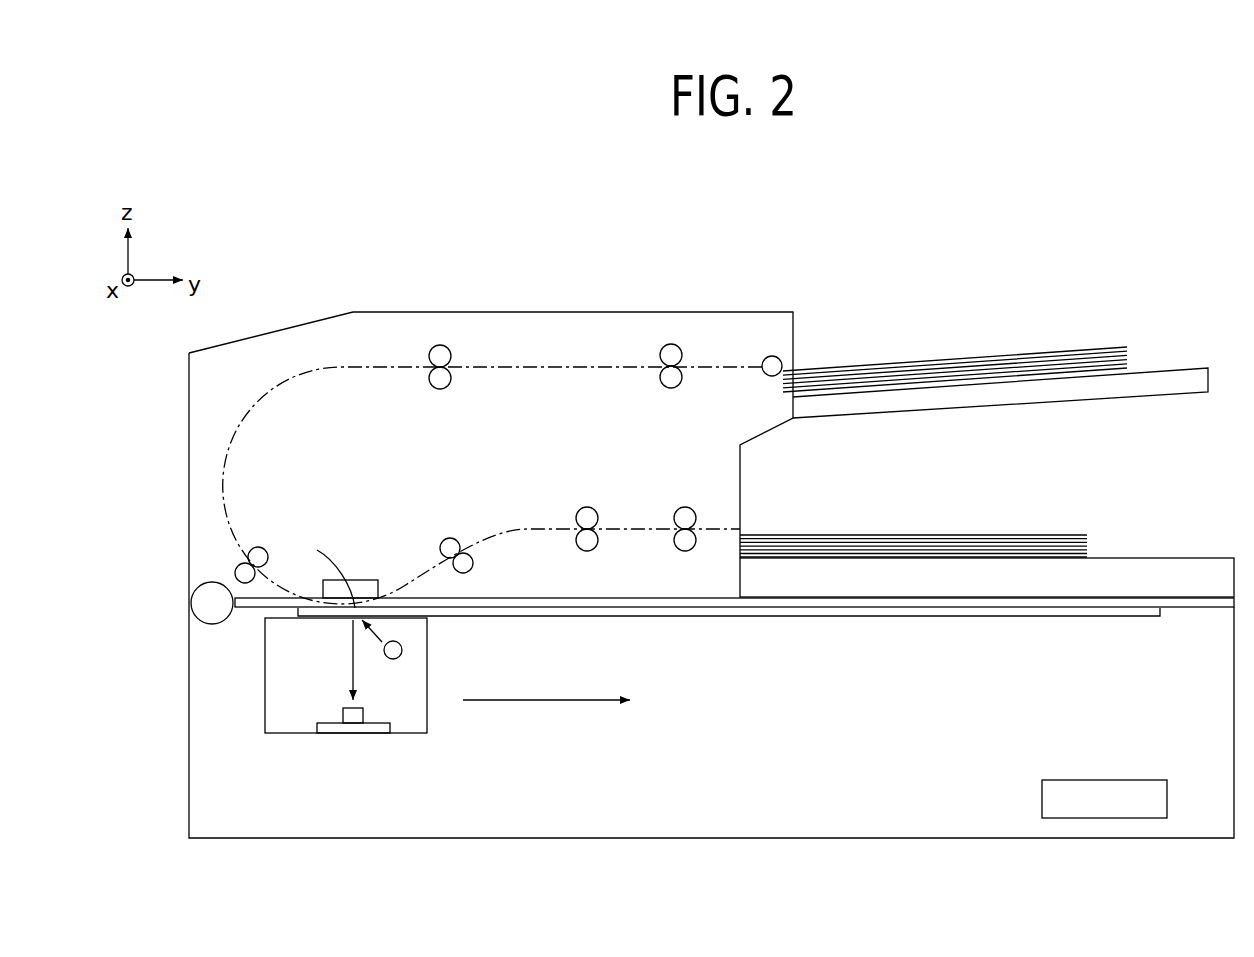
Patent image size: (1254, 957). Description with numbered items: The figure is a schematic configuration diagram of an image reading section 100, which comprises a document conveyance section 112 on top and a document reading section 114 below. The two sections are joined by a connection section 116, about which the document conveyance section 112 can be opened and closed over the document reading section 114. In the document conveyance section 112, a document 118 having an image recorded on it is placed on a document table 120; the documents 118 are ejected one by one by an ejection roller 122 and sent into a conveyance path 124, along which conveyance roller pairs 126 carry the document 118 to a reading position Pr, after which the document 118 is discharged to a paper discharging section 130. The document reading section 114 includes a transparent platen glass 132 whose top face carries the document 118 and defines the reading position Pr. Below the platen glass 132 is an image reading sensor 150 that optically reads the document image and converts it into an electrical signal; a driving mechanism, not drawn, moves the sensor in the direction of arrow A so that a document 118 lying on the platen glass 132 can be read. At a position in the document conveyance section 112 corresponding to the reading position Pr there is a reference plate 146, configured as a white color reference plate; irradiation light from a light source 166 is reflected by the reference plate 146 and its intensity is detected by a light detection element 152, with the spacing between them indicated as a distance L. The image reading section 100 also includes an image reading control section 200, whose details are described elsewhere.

The image reading section 100 is at (757, 268).
The document conveyance section 112 is at (470, 311).
The document reading section 114 is at (189, 668).
The connection section 116 is at (207, 590).
The document 118 is at (963, 355).
The document table 120 is at (1162, 368).
The ejection roller 122 is at (763, 358).
The conveyance path 124 is at (570, 370).
The conveyance roller pairs 126 is at (458, 378).
The paper discharging section 130 is at (1162, 558).
The platen glass 132 is at (837, 617).
The reference plate 146 is at (352, 572).
The image reading sensor 150 is at (283, 735).
The light detection element 152 is at (363, 710).
The light source 166 is at (402, 650).
The image reading control section 200 is at (1120, 780).
The reading position Pr is at (329, 565).
The distance L is at (363, 660).
The arrow A direction A is at (547, 700).